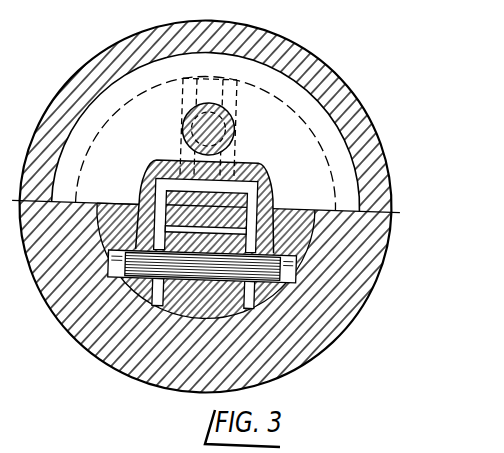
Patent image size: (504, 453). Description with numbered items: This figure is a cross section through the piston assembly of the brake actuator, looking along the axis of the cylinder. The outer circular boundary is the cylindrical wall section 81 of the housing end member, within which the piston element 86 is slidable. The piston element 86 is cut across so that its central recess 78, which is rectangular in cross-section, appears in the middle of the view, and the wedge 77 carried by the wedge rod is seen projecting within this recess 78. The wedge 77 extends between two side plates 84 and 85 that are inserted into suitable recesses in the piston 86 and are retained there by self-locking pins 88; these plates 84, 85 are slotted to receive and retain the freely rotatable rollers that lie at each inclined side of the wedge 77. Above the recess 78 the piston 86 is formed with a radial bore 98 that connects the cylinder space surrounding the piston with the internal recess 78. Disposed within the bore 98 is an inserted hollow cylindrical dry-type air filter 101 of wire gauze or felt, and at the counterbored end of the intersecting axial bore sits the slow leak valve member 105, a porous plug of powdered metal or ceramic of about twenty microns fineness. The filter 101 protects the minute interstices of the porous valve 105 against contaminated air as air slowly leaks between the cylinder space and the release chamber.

The wedge 77 is at (266, 196).
The central recess 78 is at (262, 178).
The cylindrical wall section 81 is at (347, 98).
The side plate 84 is at (150, 307).
The side plate 85 is at (248, 322).
The piston element 86 is at (298, 217).
The self-locking pin 88 is at (140, 207).
The radial bore 98 is at (235, 97).
The air filter 101 is at (182, 97).
The slow leak valve member 105 is at (233, 134).